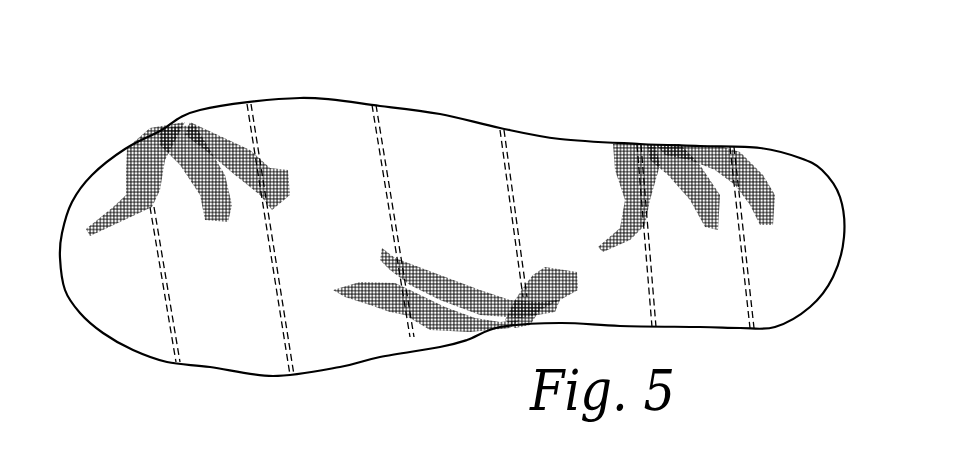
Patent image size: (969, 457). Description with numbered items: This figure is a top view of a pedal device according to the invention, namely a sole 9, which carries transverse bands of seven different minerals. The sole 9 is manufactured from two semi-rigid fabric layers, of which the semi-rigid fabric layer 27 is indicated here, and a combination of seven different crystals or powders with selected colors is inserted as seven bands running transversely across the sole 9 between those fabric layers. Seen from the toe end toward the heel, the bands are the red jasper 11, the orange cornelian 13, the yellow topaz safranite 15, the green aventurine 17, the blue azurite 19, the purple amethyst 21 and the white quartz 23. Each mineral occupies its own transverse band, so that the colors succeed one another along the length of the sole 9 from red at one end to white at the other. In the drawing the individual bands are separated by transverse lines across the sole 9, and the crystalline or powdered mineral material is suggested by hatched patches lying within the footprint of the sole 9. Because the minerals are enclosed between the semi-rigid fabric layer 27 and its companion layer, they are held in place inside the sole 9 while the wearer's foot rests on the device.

The sole 9 is at (465, 345).
The red jasper 11 is at (780, 175).
The orange cornelian 13 is at (698, 300).
The yellow topaz safranite 15 is at (540, 153).
The green aventurine 17 is at (437, 300).
The blue azurite 19 is at (318, 313).
The purple amethyst 21 is at (203, 297).
The white quartz 23 is at (97, 193).
The semi-rigid fabric layer 27 is at (330, 98).